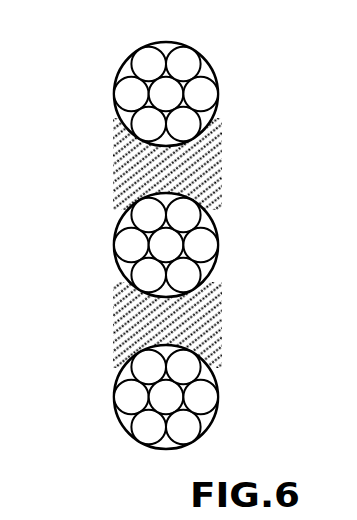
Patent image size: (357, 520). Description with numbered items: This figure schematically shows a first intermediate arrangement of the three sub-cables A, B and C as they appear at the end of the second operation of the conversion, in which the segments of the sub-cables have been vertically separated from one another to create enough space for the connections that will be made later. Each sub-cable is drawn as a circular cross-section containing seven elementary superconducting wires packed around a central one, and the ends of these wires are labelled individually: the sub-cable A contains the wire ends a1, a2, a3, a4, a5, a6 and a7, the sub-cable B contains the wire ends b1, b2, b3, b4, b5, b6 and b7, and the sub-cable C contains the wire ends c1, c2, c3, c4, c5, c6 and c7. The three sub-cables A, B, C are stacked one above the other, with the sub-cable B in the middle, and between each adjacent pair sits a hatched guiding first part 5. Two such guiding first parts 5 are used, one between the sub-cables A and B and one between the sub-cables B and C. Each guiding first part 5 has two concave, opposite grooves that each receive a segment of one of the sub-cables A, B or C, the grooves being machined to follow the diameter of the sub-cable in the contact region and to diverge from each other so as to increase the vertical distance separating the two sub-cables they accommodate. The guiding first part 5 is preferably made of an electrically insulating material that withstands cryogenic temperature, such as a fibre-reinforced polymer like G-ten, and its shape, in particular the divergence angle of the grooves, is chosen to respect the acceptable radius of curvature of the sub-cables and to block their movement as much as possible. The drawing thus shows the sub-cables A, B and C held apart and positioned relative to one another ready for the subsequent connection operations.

The guiding first part 5 is at (126, 166).
The sub-cable A is at (200, 88).
The sub-cable B is at (195, 242).
The sub-cable C is at (195, 394).
The end of elementary superconducting wire of sub-cable A a1 is at (131, 94).
The end of elementary superconducting wire of sub-cable A a2 is at (148, 64).
The end of elementary superconducting wire of sub-cable A a3 is at (148, 124).
The end of elementary superconducting wire of sub-cable A a4 is at (166, 94).
The end of elementary superconducting wire of sub-cable A a5 is at (183, 124).
The end of elementary superconducting wire of sub-cable A a6 is at (183, 64).
The end of elementary superconducting wire of sub-cable A a7 is at (200, 94).
The end of elementary superconducting wire of sub-cable B b1 is at (131, 245).
The end of elementary superconducting wire of sub-cable B b2 is at (148, 215).
The end of elementary superconducting wire of sub-cable B b3 is at (148, 275).
The end of elementary superconducting wire of sub-cable B b4 is at (166, 245).
The end of elementary superconducting wire of sub-cable B b5 is at (183, 275).
The end of elementary superconducting wire of sub-cable B b6 is at (183, 215).
The end of elementary superconducting wire of sub-cable B b7 is at (200, 245).
The end of elementary superconducting wire of sub-cable C c1 is at (131, 397).
The end of elementary superconducting wire of sub-cable C c2 is at (148, 367).
The end of elementary superconducting wire of sub-cable C c3 is at (148, 427).
The end of elementary superconducting wire of sub-cable C c4 is at (166, 397).
The end of elementary superconducting wire of sub-cable C c5 is at (183, 427).
The end of elementary superconducting wire of sub-cable C c6 is at (183, 367).
The end of elementary superconducting wire of sub-cable C c7 is at (200, 397).